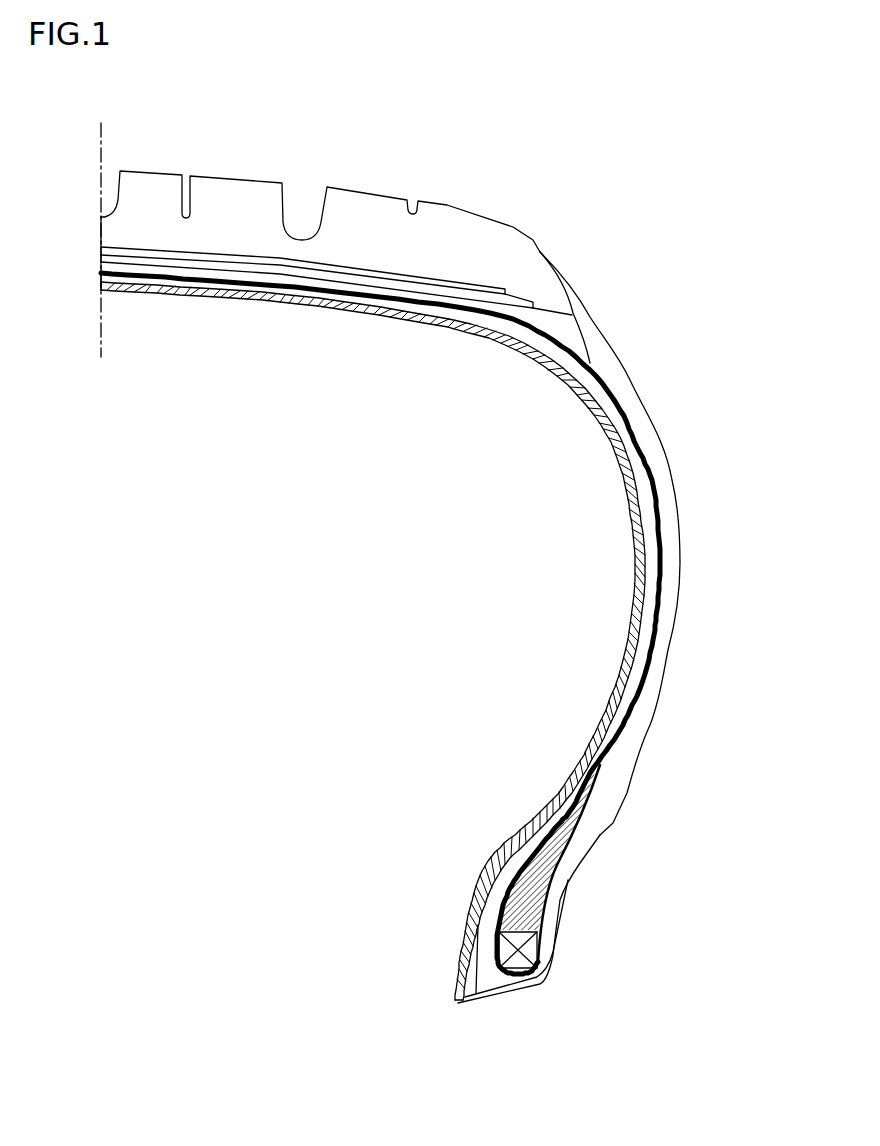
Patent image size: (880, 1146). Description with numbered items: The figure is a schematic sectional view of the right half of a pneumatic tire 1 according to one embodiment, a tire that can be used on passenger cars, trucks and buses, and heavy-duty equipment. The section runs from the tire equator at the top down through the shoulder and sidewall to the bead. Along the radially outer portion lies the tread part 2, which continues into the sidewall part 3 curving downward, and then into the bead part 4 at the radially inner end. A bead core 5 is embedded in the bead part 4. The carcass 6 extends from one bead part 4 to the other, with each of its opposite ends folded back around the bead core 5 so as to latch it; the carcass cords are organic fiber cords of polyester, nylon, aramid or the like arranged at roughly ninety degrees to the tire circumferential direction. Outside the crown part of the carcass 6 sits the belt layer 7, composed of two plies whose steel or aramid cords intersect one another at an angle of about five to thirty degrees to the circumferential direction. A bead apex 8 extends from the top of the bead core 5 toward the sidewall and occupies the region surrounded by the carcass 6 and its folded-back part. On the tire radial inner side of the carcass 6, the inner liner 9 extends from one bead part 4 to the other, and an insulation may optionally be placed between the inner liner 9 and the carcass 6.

The pneumatic tire 1 is at (234, 166).
The tread part 2 is at (385, 191).
The sidewall part 3 is at (682, 521).
The bead part 4 is at (600, 829).
The bead core 5 is at (517, 963).
The carcass 6 is at (644, 682).
The belt layer 7 is at (98, 245).
The bead apex 8 is at (518, 862).
The inner liner 9 is at (613, 715).